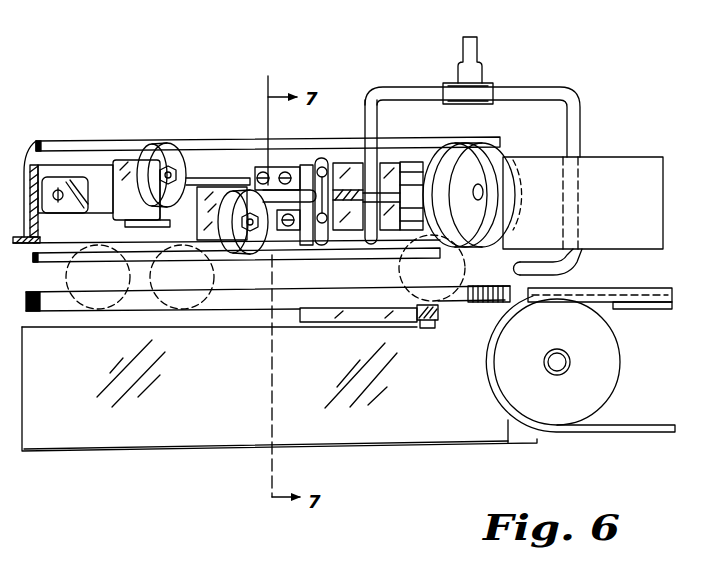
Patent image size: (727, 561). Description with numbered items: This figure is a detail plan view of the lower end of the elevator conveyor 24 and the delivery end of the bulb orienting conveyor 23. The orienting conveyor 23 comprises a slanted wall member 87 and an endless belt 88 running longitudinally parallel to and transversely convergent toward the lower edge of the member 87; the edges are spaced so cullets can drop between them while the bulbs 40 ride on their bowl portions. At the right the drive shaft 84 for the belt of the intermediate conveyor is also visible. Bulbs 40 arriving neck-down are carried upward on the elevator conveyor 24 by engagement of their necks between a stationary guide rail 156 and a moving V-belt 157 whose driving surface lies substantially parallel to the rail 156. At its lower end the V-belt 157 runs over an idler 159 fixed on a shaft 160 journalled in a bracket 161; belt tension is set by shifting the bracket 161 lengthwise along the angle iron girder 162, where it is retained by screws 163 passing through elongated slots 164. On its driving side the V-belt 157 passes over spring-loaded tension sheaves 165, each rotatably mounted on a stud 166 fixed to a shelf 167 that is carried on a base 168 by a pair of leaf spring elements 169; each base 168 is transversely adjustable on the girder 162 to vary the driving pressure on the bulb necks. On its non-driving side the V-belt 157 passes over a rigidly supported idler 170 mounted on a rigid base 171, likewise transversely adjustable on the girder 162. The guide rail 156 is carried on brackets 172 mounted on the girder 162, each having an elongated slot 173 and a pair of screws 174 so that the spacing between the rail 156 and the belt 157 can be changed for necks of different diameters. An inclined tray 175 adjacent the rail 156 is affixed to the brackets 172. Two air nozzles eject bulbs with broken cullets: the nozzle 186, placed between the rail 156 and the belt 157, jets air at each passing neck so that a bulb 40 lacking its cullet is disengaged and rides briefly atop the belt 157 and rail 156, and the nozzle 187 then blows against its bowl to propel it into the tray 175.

The bulb orienting conveyor 23 is at (627, 112).
The elevator conveyor 24 is at (174, 57).
The bulbs 40 is at (150, 302).
The drive shaft 84 is at (621, 362).
The slanted wall member 87 is at (634, 213).
The endless belt 88 is at (493, 400).
The guide rail 156 is at (200, 312).
The V-belt 157 is at (180, 140).
The idler 159 is at (488, 148).
The shaft 160 is at (484, 187).
The bracket 161 is at (352, 118).
The angle iron girder 162 is at (31, 149).
The screws 163 is at (287, 170).
The elongated slots 164 is at (268, 80).
The spring-loaded tension sheaves 165 is at (253, 248).
The stud 166 is at (272, 228).
The shelf 167 is at (215, 186).
The base 168 is at (146, 228).
The leaf spring elements 169 is at (232, 181).
The idlers 170 is at (149, 153).
The rigid base 171 is at (112, 172).
The brackets 172 is at (322, 320).
The elongated slot 173 is at (318, 160).
The screws 174 is at (344, 283).
The inclined tray 175 is at (422, 447).
The nozzle 186 is at (579, 265).
The nozzle 187 is at (380, 119).